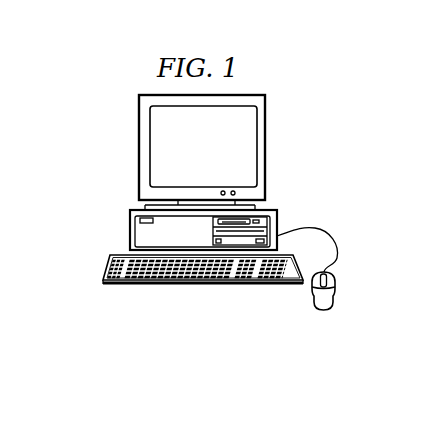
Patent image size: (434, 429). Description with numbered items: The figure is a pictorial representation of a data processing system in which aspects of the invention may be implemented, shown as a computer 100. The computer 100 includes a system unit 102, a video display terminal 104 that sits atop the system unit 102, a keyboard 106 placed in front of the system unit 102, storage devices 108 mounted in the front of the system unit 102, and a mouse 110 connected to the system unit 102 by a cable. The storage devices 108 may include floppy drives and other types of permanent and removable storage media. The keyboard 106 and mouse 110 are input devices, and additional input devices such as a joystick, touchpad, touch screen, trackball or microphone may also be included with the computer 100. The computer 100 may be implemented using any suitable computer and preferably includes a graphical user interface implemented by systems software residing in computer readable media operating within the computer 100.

The computer 100 is at (86, 139).
The system unit 102 is at (130, 228).
The video display terminal 104 is at (265, 148).
The keyboard 106 is at (125, 288).
The storage devices 108 is at (272, 223).
The mouse 110 is at (324, 310).